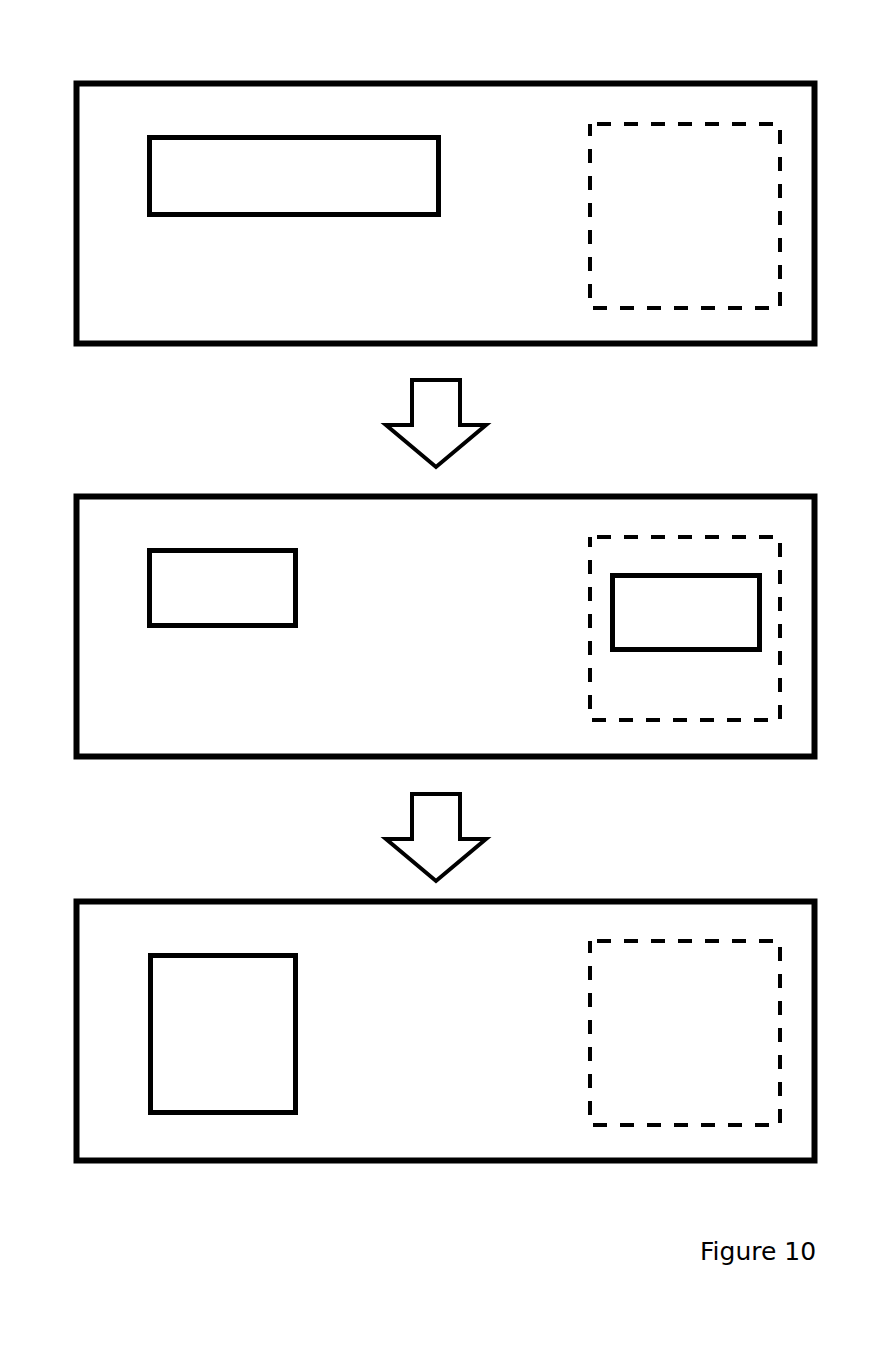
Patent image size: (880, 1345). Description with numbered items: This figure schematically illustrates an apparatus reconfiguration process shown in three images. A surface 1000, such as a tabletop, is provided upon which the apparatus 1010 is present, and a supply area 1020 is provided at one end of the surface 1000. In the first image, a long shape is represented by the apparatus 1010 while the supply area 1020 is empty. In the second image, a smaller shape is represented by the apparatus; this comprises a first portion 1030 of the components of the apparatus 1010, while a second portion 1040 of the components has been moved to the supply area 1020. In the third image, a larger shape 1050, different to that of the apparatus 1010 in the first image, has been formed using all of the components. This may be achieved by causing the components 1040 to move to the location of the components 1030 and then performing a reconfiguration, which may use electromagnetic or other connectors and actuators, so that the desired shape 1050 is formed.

The surface 1000 is at (168, 80).
The apparatus 1010 is at (297, 122).
The supply area 1020 is at (685, 122).
The first portion 1030 is at (148, 535).
The second portion 1040 is at (698, 573).
The larger shape 1050 is at (207, 938).